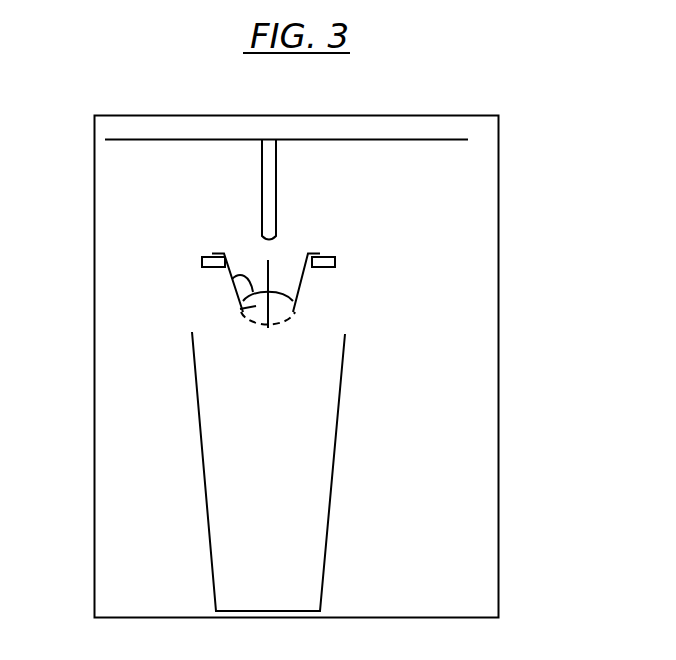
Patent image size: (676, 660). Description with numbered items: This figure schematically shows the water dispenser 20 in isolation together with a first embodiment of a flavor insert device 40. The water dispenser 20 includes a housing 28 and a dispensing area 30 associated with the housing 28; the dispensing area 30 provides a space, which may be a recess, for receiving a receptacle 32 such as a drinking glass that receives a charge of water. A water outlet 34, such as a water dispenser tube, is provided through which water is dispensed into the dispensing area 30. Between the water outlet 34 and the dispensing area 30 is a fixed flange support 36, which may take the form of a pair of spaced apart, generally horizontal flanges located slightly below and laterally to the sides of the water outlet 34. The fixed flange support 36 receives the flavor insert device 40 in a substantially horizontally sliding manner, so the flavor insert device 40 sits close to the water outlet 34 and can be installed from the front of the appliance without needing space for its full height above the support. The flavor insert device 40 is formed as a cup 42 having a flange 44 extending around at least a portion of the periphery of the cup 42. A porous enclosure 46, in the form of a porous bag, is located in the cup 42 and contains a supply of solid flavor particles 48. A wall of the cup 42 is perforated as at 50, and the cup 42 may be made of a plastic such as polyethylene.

The water dispenser 20 is at (500, 405).
The housing 28 is at (500, 265).
The dispensing area 30 is at (457, 473).
The receptacle 32 is at (328, 522).
The water outlet 34 is at (277, 163).
The fixed flange support 36 is at (202, 262).
The flavor insert device 40 is at (308, 301).
The cup 42 is at (302, 278).
The flange 44 is at (223, 252).
The porous enclosure 46 is at (232, 279).
The solid flavor particles 48 is at (244, 311).
The perforations 50 is at (256, 323).